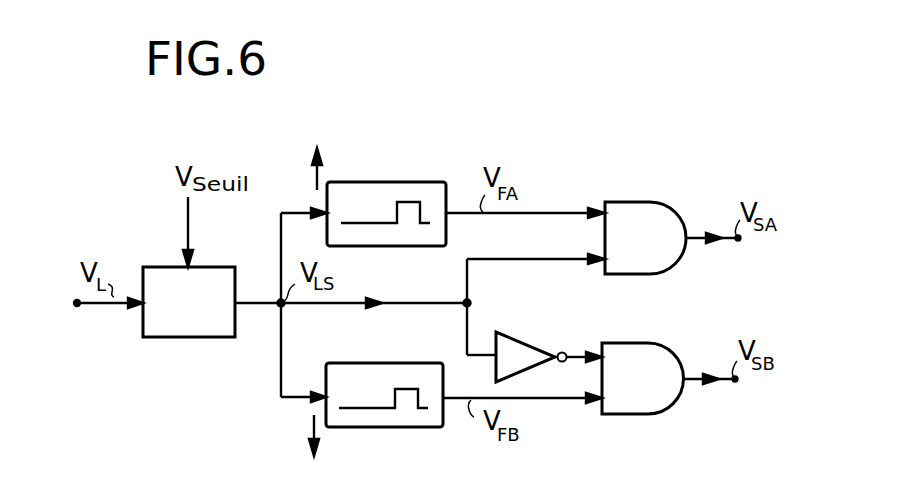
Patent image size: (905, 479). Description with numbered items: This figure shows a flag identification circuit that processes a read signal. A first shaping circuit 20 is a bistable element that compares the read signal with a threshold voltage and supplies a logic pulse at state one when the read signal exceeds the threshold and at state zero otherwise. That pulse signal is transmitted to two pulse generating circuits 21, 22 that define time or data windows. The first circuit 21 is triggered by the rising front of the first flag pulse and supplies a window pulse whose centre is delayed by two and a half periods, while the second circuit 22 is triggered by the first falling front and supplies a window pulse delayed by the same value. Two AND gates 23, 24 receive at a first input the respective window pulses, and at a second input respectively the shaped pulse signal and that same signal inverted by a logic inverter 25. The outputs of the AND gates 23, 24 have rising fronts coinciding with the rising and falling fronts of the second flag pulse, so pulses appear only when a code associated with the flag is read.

The first circuit for shaping the read signal 20 is at (188, 338).
The first pulse generating circuit 21 is at (384, 182).
The second pulse generating circuit 22 is at (383, 363).
The first AND gate 23 is at (618, 202).
The second AND gate 24 is at (610, 343).
The logic inverter 25 is at (522, 335).